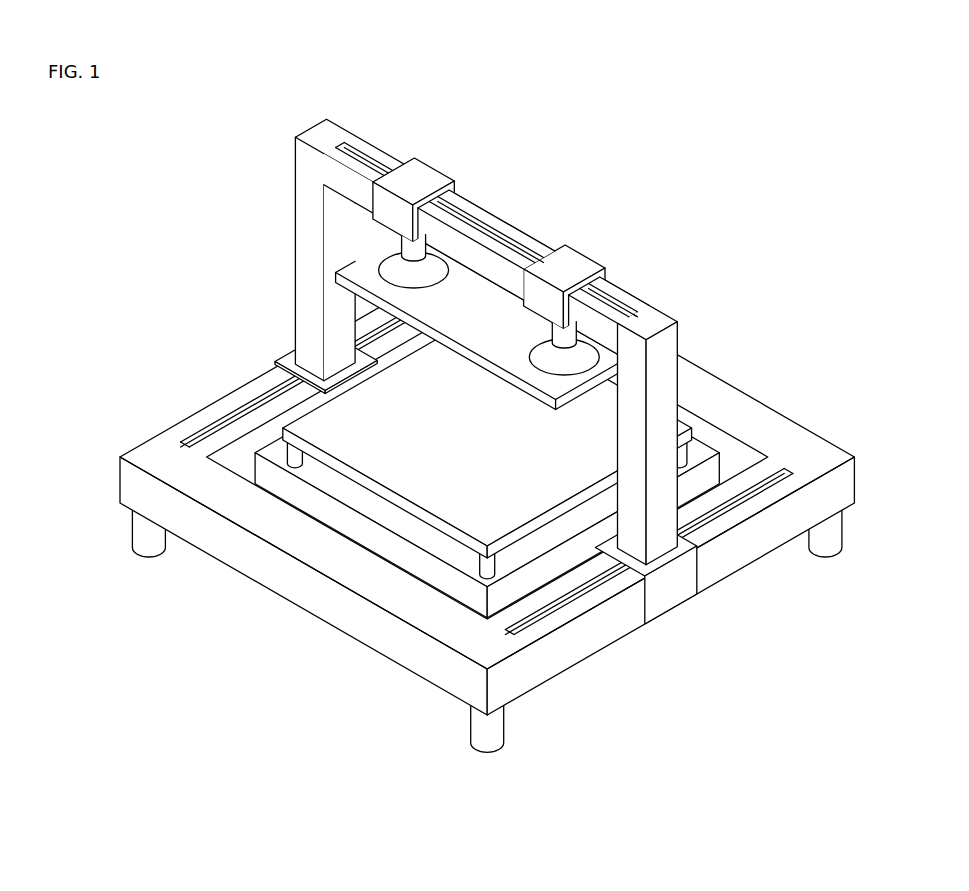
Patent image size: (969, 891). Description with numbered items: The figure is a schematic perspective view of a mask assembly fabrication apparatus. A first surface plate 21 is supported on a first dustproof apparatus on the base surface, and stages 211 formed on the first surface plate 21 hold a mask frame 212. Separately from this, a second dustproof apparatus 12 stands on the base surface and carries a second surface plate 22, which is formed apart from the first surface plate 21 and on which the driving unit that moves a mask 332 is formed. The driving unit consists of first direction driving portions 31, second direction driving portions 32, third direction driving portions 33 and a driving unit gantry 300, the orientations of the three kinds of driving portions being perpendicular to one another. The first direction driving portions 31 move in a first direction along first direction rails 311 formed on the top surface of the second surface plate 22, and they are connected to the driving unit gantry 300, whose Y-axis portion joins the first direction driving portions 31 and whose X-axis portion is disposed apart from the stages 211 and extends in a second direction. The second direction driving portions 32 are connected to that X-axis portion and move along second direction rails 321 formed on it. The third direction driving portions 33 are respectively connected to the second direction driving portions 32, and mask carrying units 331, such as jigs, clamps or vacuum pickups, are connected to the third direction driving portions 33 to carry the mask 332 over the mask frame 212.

The second dustproof apparatus 12 is at (142, 536).
The second surface plate 22 is at (137, 486).
The first surface plate 21 is at (367, 500).
The stages 211 is at (479, 565).
The mask frame 212 is at (455, 500).
The driving unit gantry 300 is at (491, 383).
The first direction driving portions 31 is at (670, 598).
The first direction rails 311 is at (548, 603).
The second direction driving portions 32 is at (418, 181).
The second direction rails 321 is at (494, 234).
The third direction driving portions 33 is at (400, 237).
The mask carrying units 331 is at (405, 275).
The mask 332 is at (467, 318).